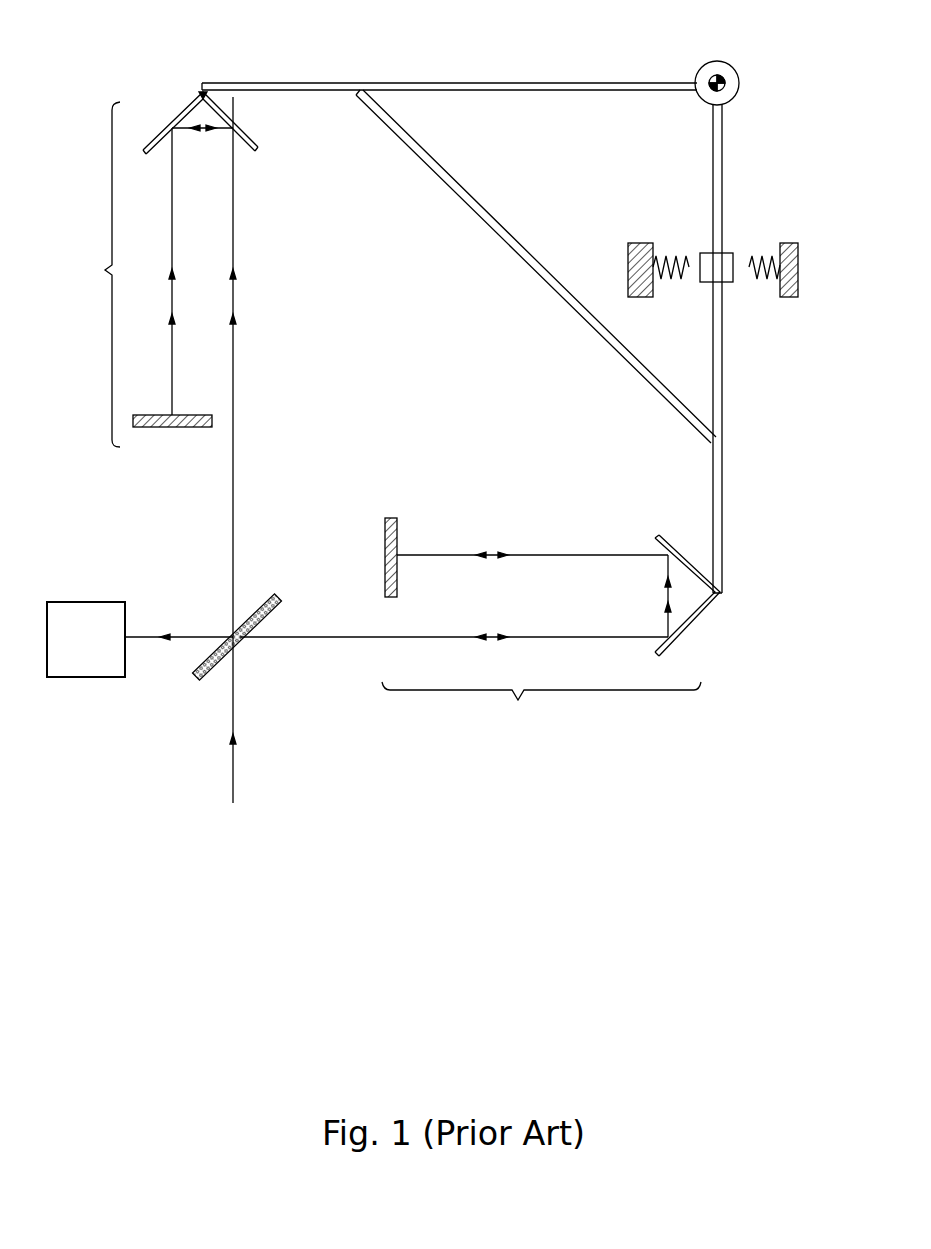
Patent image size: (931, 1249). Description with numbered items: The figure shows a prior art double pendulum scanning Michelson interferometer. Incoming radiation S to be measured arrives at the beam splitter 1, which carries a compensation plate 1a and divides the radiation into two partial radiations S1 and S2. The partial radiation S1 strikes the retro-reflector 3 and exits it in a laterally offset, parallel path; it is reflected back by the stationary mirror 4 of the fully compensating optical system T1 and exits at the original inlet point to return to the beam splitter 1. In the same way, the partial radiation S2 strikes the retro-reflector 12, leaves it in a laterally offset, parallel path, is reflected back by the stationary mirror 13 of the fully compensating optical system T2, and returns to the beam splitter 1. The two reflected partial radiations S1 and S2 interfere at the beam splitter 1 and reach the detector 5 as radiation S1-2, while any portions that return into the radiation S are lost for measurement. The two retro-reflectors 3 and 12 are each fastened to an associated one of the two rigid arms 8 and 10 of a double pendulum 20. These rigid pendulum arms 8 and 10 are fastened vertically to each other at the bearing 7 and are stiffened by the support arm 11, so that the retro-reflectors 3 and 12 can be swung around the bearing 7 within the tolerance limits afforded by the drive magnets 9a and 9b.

The beam splitter 1 is at (275, 590).
The compensation plate 1a is at (214, 680).
The retro-reflector 3 is at (696, 613).
The stationary mirror 4 is at (398, 528).
The detector 5 is at (85, 601).
The bearing 7 is at (723, 76).
The rigid arm 8 is at (722, 376).
The drive magnet 9a is at (642, 243).
The drive magnet 9b is at (790, 243).
The rigid arm 10 is at (497, 81).
The support arm 11 is at (510, 244).
The retro-reflector 12 is at (254, 137).
The stationary mirror 13 is at (195, 428).
The double pendulum 20 is at (737, 494).
The incoming radiation S is at (235, 774).
The partial radiation S1 is at (315, 640).
The partial radiation S2 is at (236, 389).
The radiation S1-2 is at (184, 636).
The fully compensating optical system T1 is at (541, 708).
The fully compensating optical system T2 is at (96, 274).